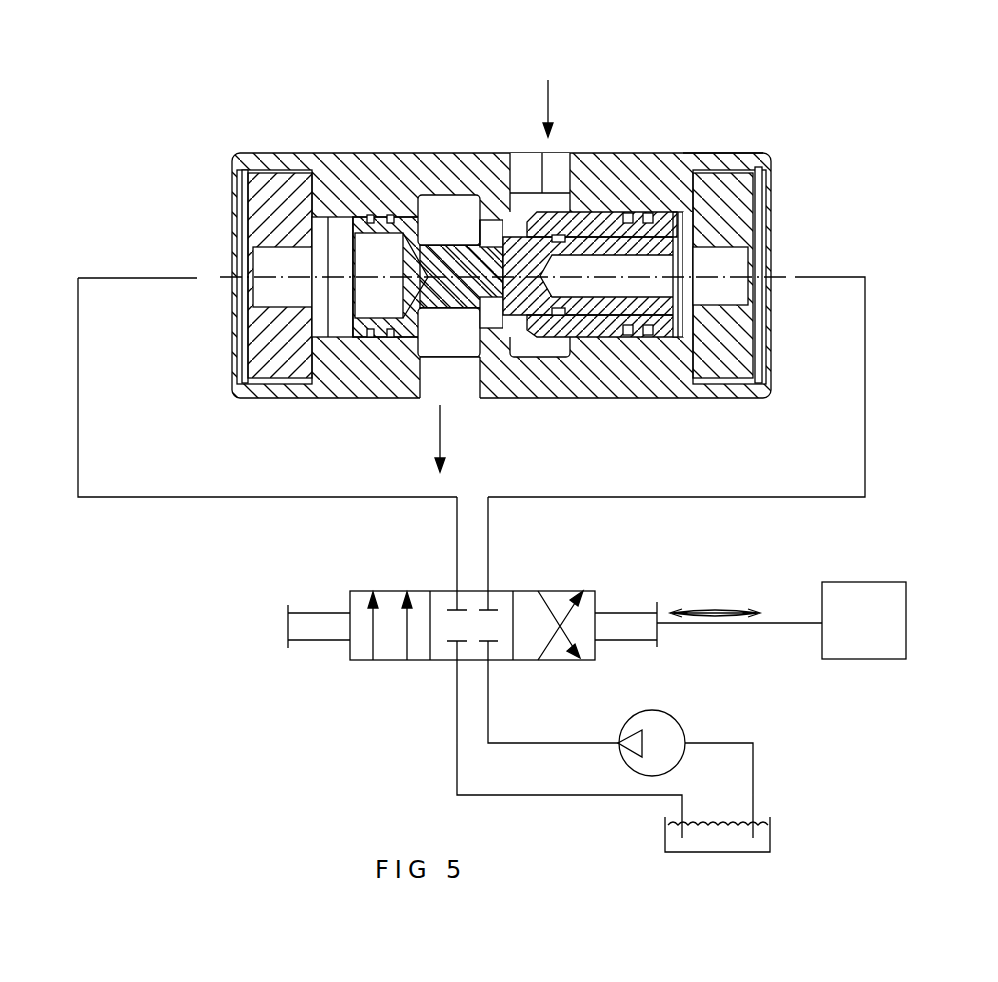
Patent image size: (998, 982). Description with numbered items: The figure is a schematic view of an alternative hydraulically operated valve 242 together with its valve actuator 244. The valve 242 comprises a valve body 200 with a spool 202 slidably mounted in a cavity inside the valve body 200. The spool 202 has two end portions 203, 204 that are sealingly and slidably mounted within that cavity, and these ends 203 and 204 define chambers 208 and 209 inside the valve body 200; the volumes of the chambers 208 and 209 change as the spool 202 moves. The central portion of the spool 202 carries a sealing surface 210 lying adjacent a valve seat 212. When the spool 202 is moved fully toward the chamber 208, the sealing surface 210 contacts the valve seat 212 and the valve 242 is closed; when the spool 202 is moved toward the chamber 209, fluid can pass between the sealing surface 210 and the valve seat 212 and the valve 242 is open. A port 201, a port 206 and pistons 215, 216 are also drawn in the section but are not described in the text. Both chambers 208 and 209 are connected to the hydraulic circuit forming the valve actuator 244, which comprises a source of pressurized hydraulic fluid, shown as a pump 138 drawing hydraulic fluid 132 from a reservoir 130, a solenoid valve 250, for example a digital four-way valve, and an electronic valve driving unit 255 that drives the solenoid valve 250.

The valve body 200 is at (537, 378).
The inlet port 201 is at (528, 168).
The spool 202 is at (455, 265).
The end portion of spool 203 is at (353, 217).
The end portion of spool 204 is at (593, 220).
The outlet port 206 is at (437, 378).
The chamber 208 is at (335, 305).
The chamber 209 is at (633, 283).
The sealing surface 210 is at (530, 213).
The valve seat 212 is at (510, 185).
The piston 215 is at (727, 260).
The piston 216 is at (282, 263).
The valve 242 is at (683, 153).
The valve actuator 244 is at (866, 555).
The solenoid valve 250 is at (390, 588).
The electronic valve driving unit 255 is at (855, 638).
The pump 138 is at (660, 725).
The hydraulic fluid 132 is at (713, 843).
The reservoir 130 is at (777, 848).